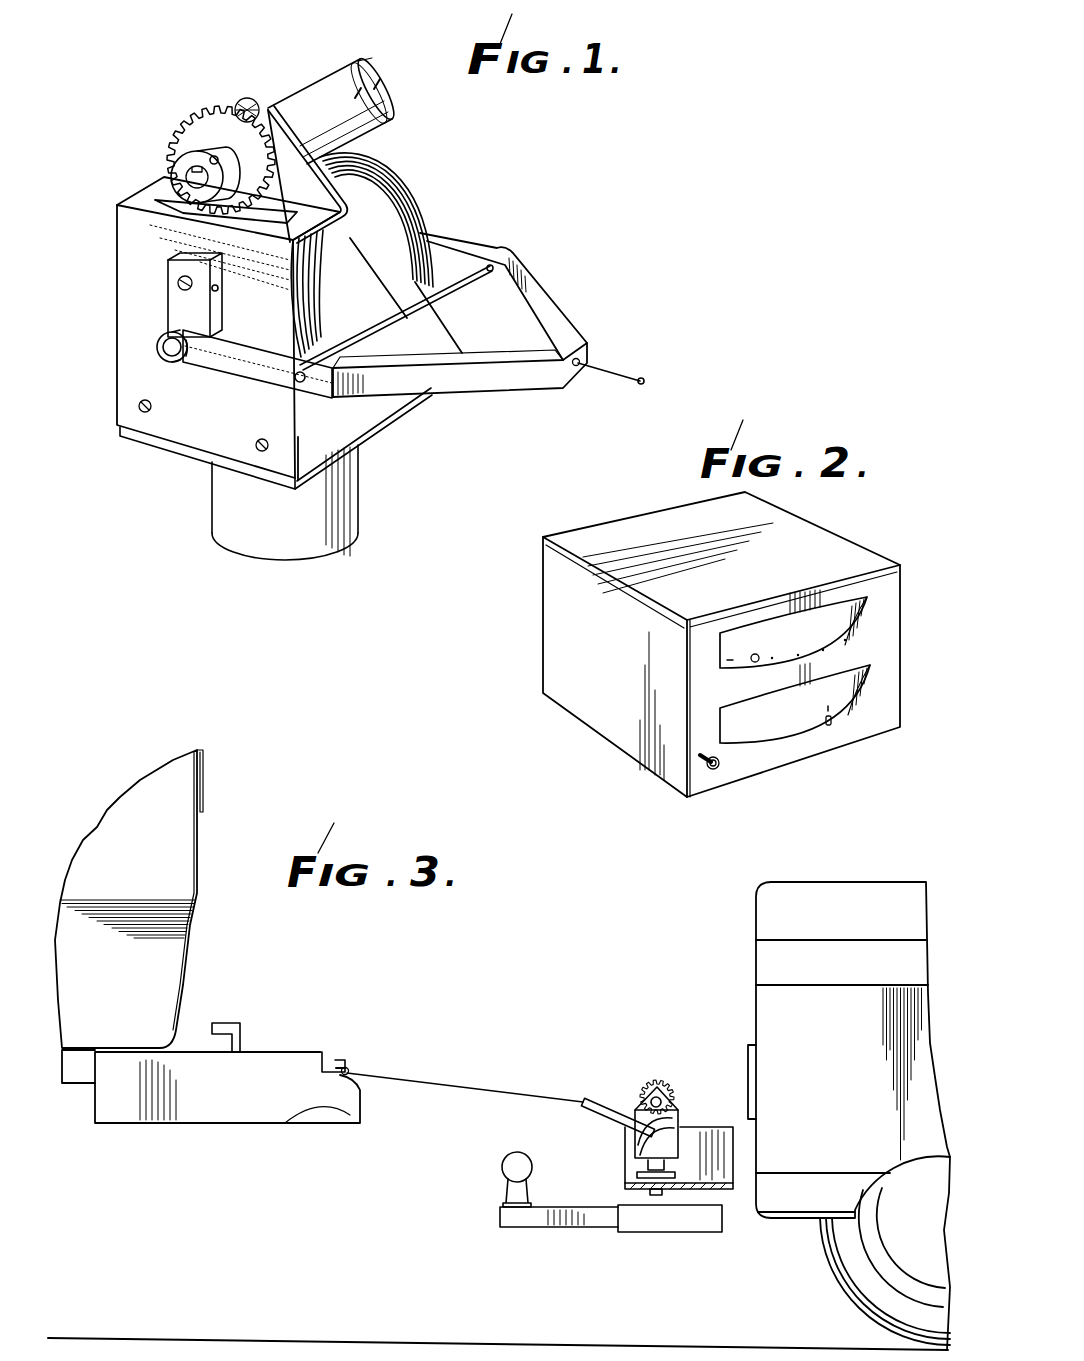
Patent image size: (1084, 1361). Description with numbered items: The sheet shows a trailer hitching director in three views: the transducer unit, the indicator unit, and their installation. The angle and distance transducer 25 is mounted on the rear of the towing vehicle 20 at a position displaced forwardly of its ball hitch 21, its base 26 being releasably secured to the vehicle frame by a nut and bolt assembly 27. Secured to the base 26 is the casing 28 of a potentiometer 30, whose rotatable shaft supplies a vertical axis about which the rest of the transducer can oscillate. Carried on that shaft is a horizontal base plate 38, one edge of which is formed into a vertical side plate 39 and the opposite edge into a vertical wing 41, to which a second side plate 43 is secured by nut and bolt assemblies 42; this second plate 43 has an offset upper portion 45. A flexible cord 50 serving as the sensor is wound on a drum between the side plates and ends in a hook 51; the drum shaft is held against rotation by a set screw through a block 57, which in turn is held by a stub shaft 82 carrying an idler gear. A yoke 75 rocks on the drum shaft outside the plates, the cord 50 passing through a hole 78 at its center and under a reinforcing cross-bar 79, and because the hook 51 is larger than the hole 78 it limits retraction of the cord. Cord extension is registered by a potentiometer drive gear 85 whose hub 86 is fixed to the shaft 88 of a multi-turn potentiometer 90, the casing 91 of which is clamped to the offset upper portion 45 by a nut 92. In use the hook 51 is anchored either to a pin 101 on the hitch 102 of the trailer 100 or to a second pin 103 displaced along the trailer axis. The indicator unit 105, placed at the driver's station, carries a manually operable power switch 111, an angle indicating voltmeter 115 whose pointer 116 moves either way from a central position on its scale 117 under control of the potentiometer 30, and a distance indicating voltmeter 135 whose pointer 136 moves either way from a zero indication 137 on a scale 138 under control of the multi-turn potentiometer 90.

In FIG. 3, the towing vehicle 20 is at (763, 898).
In FIG. 3, the ball hitch 21 is at (502, 1167).
In FIG. 1, the angle and distance transducer 25 is at (488, 191).
In FIG. 3, the angle and distance transducer 25 is at (677, 1107).
In FIG. 3, the base 26 is at (643, 1175).
In FIG. 3, the nut and bolt assembly 27 is at (657, 1195).
In FIG. 1, the casing 28 is at (237, 497).
In FIG. 1, the potentiometer 30 is at (225, 550).
In FIG. 1, the horizontal base plate 38 is at (393, 430).
In FIG. 1, the vertical side plate 39 is at (423, 343).
In FIG. 1, the vertical wing 41 is at (165, 440).
In FIG. 1, the nut and bolt assemblies 42 is at (138, 406).
In FIG. 1, the second side plate 43 is at (116, 350).
In FIG. 1, the offset upper portion 45 is at (246, 105).
In FIG. 1, the flexible cord 50 is at (648, 381).
In FIG. 3, the flexible cord 50 is at (473, 1085).
In FIG. 3, the hook 51 is at (349, 1070).
In FIG. 1, the block 57 is at (177, 305).
In FIG. 1, the yoke 75 is at (492, 382).
In FIG. 3, the yoke 75 is at (618, 1110).
In FIG. 1, the hole 78 is at (590, 358).
In FIG. 1, the cross-bar 79 is at (487, 265).
In FIG. 1, the stub shaft 82 is at (178, 281).
In FIG. 1, the potentiometer drive gear 85 is at (188, 120).
In FIG. 1, the hub 86 is at (200, 150).
In FIG. 1, the shaft 88 is at (186, 175).
In FIG. 1, the multi-turn potentiometer 90 is at (412, 122).
In FIG. 1, the casing 91 is at (355, 70).
In FIG. 1, the nut 92 is at (270, 108).
In FIG. 3, the trailer 100 is at (157, 978).
In FIG. 3, the pin 101 is at (330, 1055).
In FIG. 3, the hitch 102 is at (347, 1097).
In FIG. 3, the pin 103 is at (220, 1023).
In FIG. 2, the indicator unit 105 is at (530, 625).
In FIG. 2, the switch 111 is at (715, 777).
In FIG. 2, the angle indicating voltmeter 115 is at (853, 688).
In FIG. 2, the pointer 116 is at (826, 710).
In FIG. 2, the scale 117 is at (833, 726).
In FIG. 2, the distance indicating voltmeter 135 is at (866, 603).
In FIG. 2, the pointer 136 is at (725, 645).
In FIG. 2, the zero indication 137 is at (753, 663).
In FIG. 2, the scale 138 is at (860, 638).